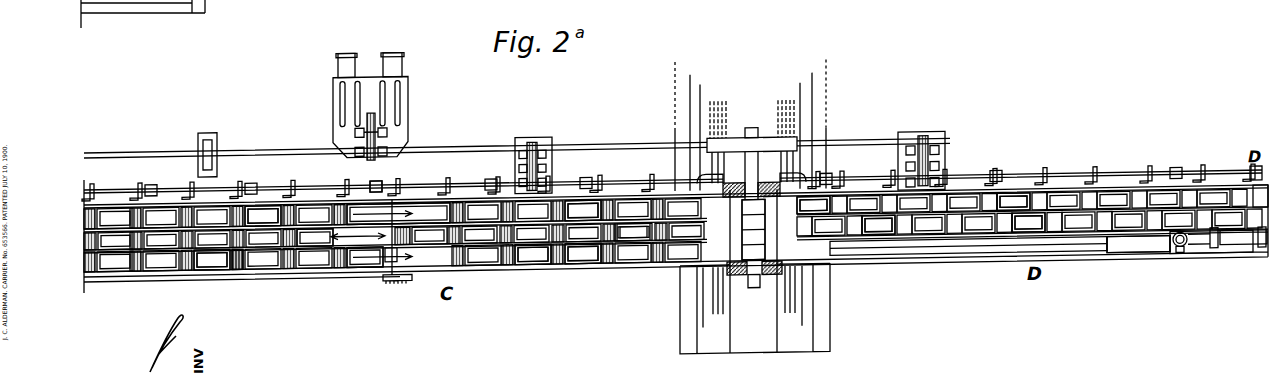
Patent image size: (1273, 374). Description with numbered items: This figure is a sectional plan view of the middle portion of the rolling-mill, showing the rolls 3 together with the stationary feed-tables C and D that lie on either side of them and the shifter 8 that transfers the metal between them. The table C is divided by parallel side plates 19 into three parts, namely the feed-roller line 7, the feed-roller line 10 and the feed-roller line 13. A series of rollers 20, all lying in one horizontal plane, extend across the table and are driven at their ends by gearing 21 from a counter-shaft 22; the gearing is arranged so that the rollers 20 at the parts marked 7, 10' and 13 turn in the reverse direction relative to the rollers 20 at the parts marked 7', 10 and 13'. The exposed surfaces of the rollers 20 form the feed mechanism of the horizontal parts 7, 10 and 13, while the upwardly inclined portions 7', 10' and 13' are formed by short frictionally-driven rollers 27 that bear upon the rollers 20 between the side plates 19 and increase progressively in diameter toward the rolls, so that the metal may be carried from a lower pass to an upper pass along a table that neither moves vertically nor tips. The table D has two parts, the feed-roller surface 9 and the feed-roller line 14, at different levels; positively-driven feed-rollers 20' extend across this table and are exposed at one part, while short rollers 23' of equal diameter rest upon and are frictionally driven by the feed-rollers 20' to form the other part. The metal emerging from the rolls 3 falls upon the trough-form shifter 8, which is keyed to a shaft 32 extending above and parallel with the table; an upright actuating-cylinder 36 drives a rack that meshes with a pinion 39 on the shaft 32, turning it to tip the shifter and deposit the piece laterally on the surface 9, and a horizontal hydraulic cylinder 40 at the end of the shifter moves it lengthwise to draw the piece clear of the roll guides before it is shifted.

The rolls 3 is at (753, 255).
The feed-roller surface or line 7 is at (212, 276).
The final portion of feed-roller line 7' is at (533, 273).
The shifter 8 is at (975, 252).
The feed-roller surface 9 is at (878, 224).
The feed-roller line 10 is at (632, 258).
The latter half of feed-roller line 10' is at (357, 264).
The feed-roller line 13 is at (263, 199).
The latter half of feed-roller line 13' is at (583, 188).
The feed-roller line 14 is at (826, 218).
The side plates 19 is at (585, 271).
The rollers 20 is at (240, 275).
The positively-driven feed-rollers 20' is at (1025, 221).
The gearing 21 is at (246, 196).
The counter-shaft 22 is at (507, 166).
The short rollers 23' is at (1018, 180).
The frictionally-driven rollers 27 is at (230, 245).
The shaft 32 is at (1120, 264).
The actuating-cylinder 36 is at (1172, 264).
The pinion 39 is at (1180, 266).
The hydraulic cylinder 40 is at (1240, 258).